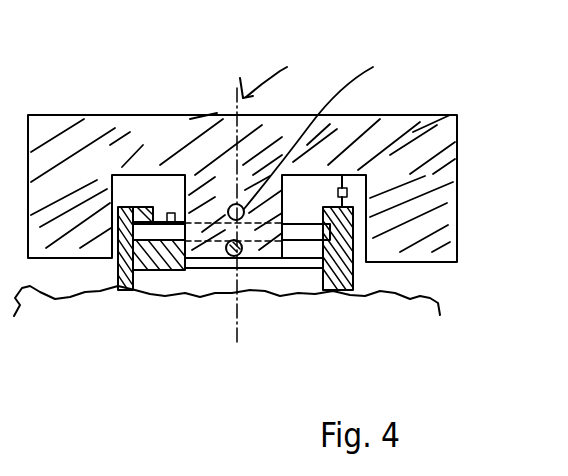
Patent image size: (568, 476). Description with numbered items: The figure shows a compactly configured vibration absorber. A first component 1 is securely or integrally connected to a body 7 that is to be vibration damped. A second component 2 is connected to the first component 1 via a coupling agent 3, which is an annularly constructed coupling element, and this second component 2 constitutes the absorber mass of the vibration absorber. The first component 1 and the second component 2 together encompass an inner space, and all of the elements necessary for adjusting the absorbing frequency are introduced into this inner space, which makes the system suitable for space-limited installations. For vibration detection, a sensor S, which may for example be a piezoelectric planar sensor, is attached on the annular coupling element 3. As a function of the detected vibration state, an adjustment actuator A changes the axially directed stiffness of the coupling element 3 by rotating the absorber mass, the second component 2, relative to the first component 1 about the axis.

The first component 1 is at (338, 276).
The second component 2 is at (438, 146).
The coupling agent 3 is at (315, 228).
The body to be vibration damped 7 is at (128, 275).
The sensor S is at (168, 212).
The adjustment actuator A is at (346, 188).